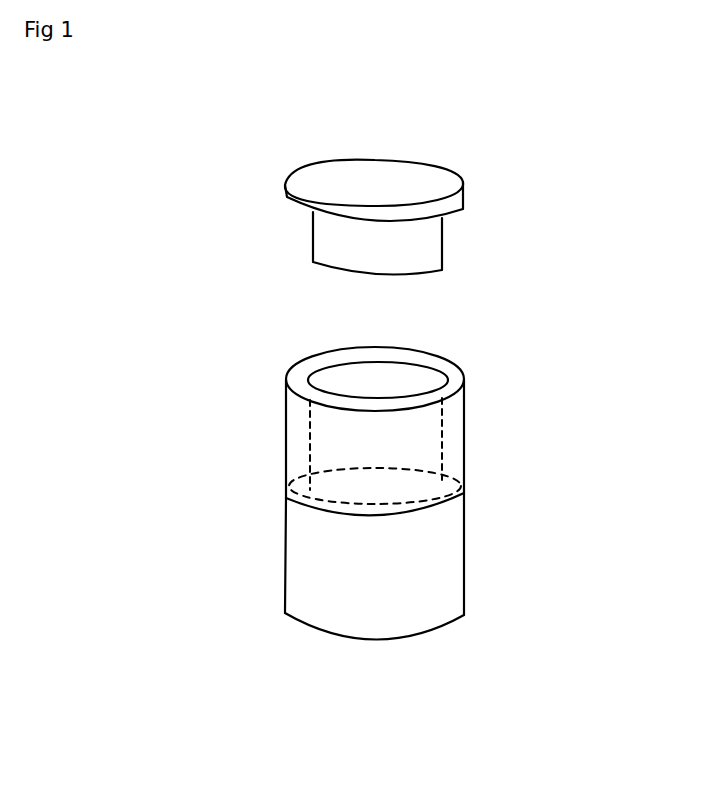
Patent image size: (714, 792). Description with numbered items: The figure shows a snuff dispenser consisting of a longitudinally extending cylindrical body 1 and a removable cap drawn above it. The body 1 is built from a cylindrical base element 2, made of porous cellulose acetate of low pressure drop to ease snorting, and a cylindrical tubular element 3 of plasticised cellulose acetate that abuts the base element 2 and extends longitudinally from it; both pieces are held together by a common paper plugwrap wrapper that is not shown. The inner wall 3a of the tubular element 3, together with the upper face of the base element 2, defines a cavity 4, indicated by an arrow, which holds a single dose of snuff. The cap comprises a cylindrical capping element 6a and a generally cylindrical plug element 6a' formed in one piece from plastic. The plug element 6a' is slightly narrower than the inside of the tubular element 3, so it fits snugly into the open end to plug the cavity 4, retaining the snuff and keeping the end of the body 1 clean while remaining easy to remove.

The cylindrical body 1 is at (535, 365).
The cylindrical base element 2 is at (356, 603).
The cylindrical tubular element 3 is at (347, 407).
The inner wall 3a is at (332, 380).
The cavity 4 is at (380, 382).
The capping element 6a is at (414, 161).
The plug element 6a' is at (456, 230).